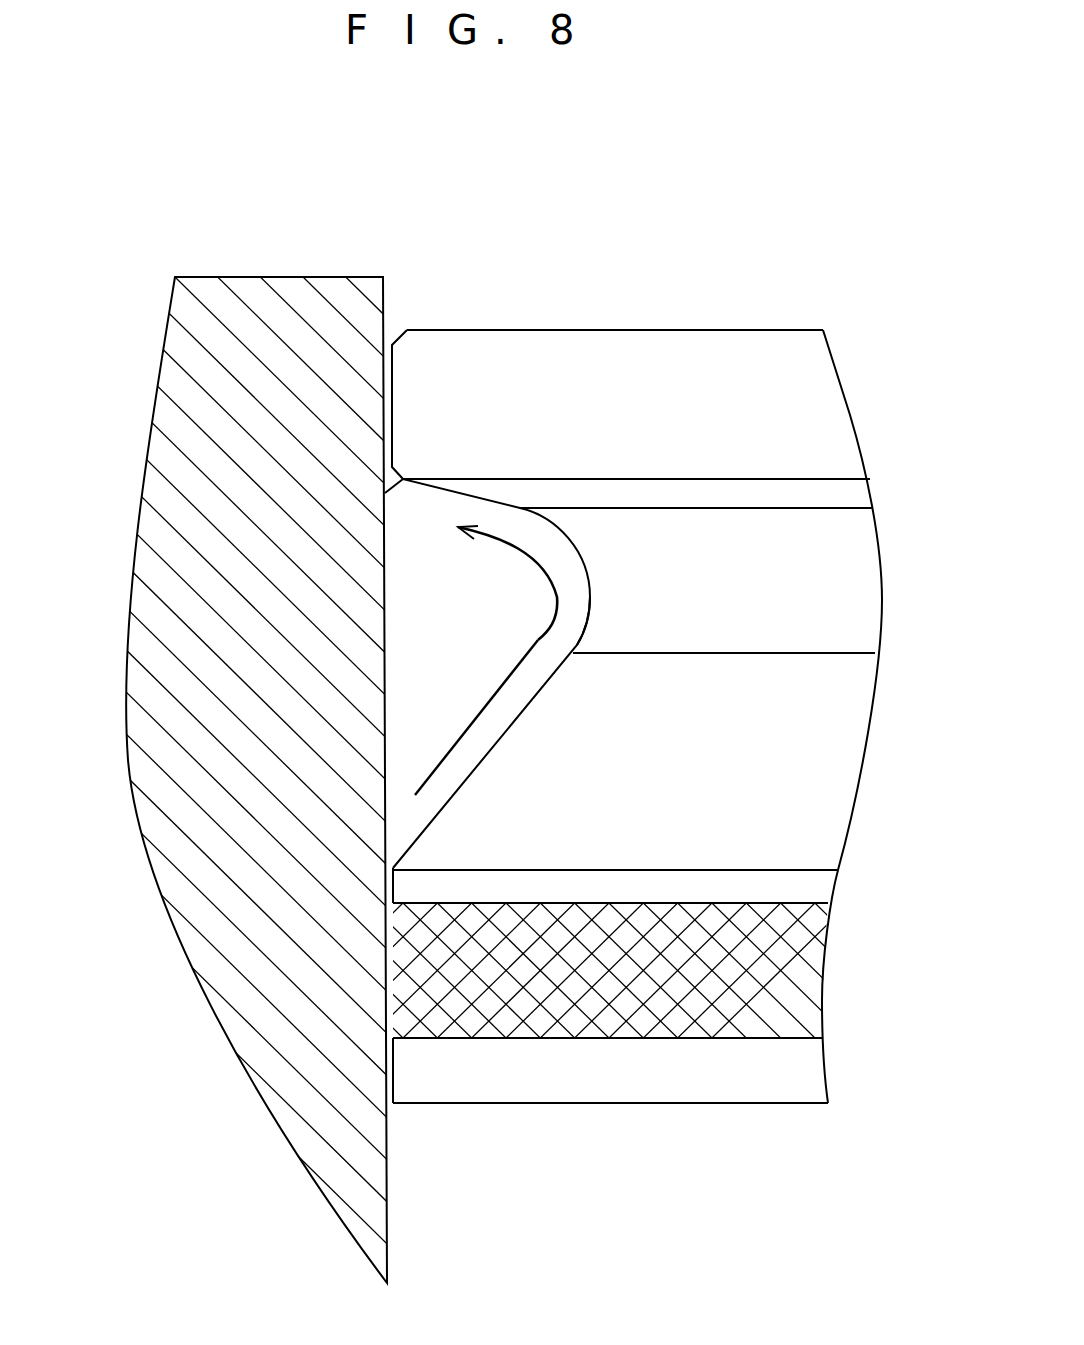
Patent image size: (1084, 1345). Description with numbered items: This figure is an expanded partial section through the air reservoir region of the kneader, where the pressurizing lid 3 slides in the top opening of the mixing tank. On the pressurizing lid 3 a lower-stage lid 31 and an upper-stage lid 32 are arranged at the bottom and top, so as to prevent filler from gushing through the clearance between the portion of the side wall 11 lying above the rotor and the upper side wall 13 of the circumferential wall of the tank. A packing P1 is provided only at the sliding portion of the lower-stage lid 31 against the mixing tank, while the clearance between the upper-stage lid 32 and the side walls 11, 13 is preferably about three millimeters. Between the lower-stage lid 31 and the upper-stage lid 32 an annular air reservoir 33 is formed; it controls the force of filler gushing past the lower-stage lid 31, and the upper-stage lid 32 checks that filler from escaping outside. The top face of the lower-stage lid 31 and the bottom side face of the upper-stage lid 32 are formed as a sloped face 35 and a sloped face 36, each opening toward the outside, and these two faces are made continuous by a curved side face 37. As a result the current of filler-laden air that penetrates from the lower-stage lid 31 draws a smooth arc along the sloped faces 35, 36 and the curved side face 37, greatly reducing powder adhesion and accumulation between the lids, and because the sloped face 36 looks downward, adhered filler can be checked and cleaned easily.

The pressurizing lid 3 is at (718, 297).
The side wall 11 is at (403, 479).
The upper side wall 13 is at (250, 649).
The lower-stage lid 31 is at (563, 1103).
The upper-stage lid 32 is at (557, 325).
The air reservoir 33 is at (470, 597).
The sloped face 35 is at (450, 807).
The sloped face 36 is at (455, 493).
The curved side face 37 is at (590, 597).
The packing P1 is at (682, 1020).